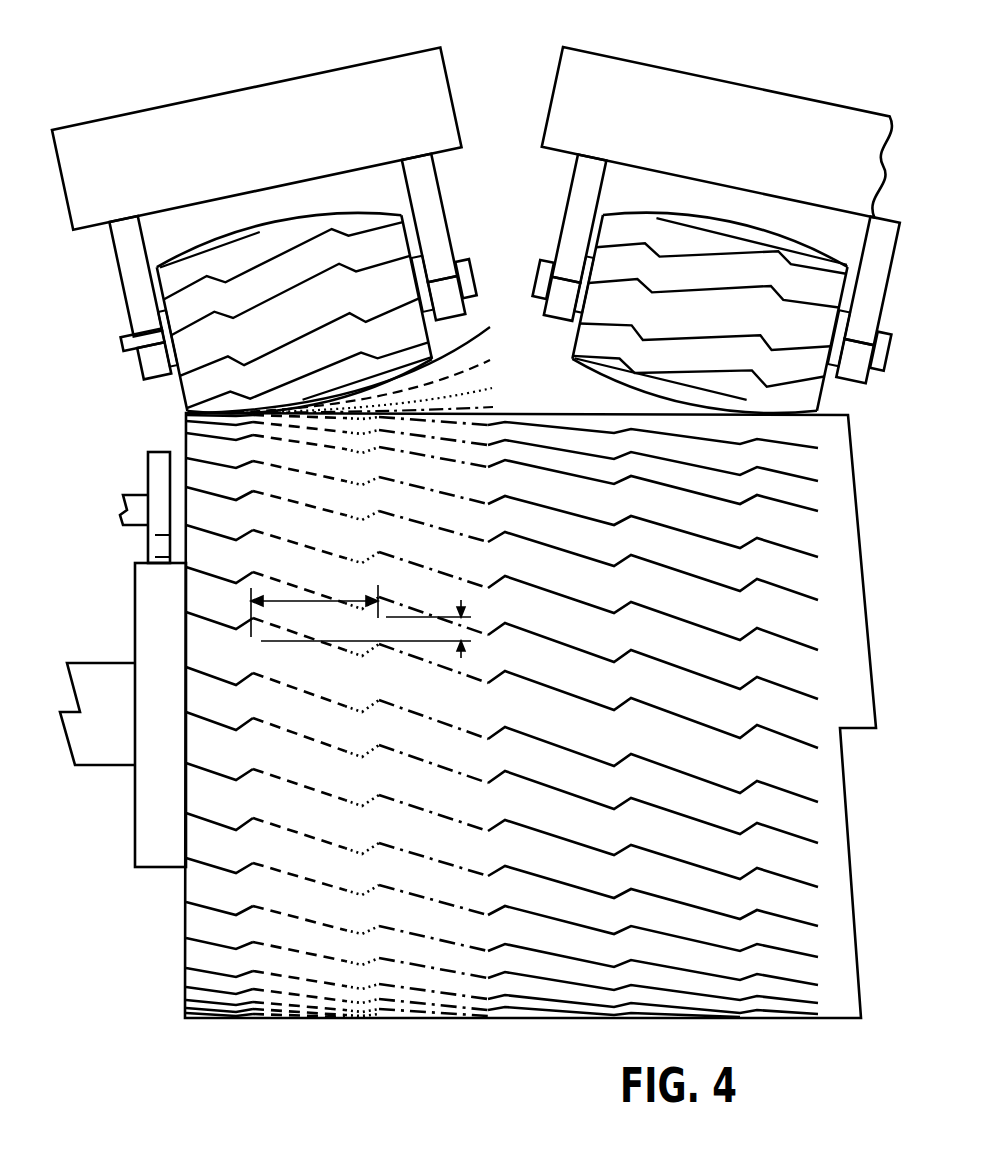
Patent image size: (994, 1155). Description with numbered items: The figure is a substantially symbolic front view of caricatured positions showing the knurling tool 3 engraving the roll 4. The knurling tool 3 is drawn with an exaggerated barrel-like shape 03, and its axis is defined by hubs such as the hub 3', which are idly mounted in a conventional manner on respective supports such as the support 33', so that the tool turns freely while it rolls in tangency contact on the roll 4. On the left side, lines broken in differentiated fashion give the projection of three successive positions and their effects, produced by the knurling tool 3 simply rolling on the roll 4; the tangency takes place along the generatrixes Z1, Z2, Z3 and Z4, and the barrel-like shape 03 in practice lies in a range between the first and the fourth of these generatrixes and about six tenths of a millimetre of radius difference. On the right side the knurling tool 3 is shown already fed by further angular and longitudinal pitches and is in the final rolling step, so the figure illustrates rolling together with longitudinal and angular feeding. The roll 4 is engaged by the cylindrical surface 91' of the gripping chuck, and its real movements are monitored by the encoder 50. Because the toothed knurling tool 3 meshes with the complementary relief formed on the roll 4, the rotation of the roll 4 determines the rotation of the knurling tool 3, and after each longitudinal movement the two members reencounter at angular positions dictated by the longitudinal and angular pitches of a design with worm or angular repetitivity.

The knurling tool 3 is at (295, 308).
The barrel-like shape 03 is at (357, 213).
The support 33' is at (273, 213).
The hub 3' is at (133, 356).
The roll 4 is at (575, 784).
The encoder 50 is at (158, 490).
The cylindrical surface 91' is at (123, 715).
The generatrix of tangency Z1 is at (355, 365).
The generatrix of tangency Z2 is at (355, 382).
The generatrix of tangency Z3 is at (357, 394).
The generatrix of tangency Z4 is at (357, 408).